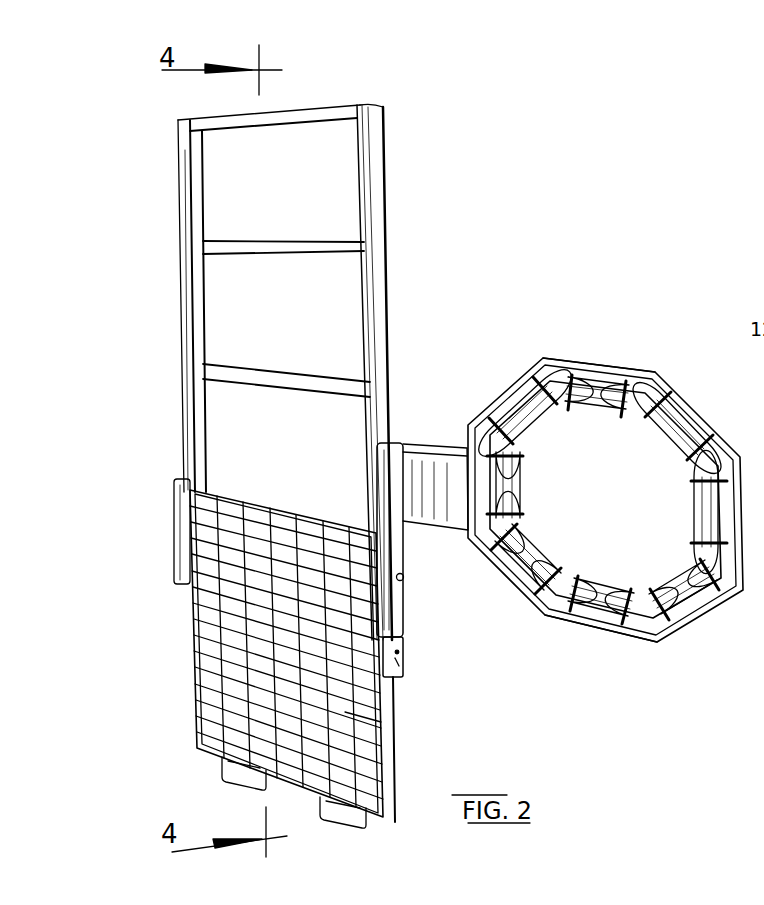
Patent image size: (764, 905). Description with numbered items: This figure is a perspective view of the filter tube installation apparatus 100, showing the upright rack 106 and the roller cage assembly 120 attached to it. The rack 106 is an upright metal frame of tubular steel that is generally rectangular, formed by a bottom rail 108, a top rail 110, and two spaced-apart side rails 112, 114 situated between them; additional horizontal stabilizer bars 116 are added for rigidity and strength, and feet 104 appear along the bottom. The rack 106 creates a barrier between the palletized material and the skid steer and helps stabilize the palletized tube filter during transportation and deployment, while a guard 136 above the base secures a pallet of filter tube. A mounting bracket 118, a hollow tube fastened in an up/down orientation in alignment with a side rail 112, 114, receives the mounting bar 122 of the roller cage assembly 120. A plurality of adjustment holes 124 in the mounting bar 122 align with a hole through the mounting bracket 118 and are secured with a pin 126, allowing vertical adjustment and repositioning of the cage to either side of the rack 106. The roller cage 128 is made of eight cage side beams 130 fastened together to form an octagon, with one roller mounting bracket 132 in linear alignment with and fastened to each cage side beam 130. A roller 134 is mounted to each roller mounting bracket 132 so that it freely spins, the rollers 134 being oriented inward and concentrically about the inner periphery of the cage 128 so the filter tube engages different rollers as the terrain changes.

The gate apparatus 100 is at (187, 99).
The feet 104 is at (333, 805).
The upright rack 106 is at (395, 179).
The bottom rail 108 is at (240, 745).
The top rail 110 is at (237, 122).
The side rail 112 is at (185, 173).
The side rail 114 is at (378, 207).
The horizontal stabilizer bars 116 is at (303, 381).
The mounting bracket 118 is at (178, 490).
The roller cage assembly 120 is at (557, 348).
The mounting bar 122 is at (402, 665).
The adjustment holes 124 is at (403, 650).
The pin 126 is at (405, 577).
The roller cage 128 is at (522, 378).
The cage side beams 130 is at (607, 372).
The roller mounting brackets 132 is at (723, 440).
The rollers 134 is at (667, 447).
The guard 136 is at (346, 710).